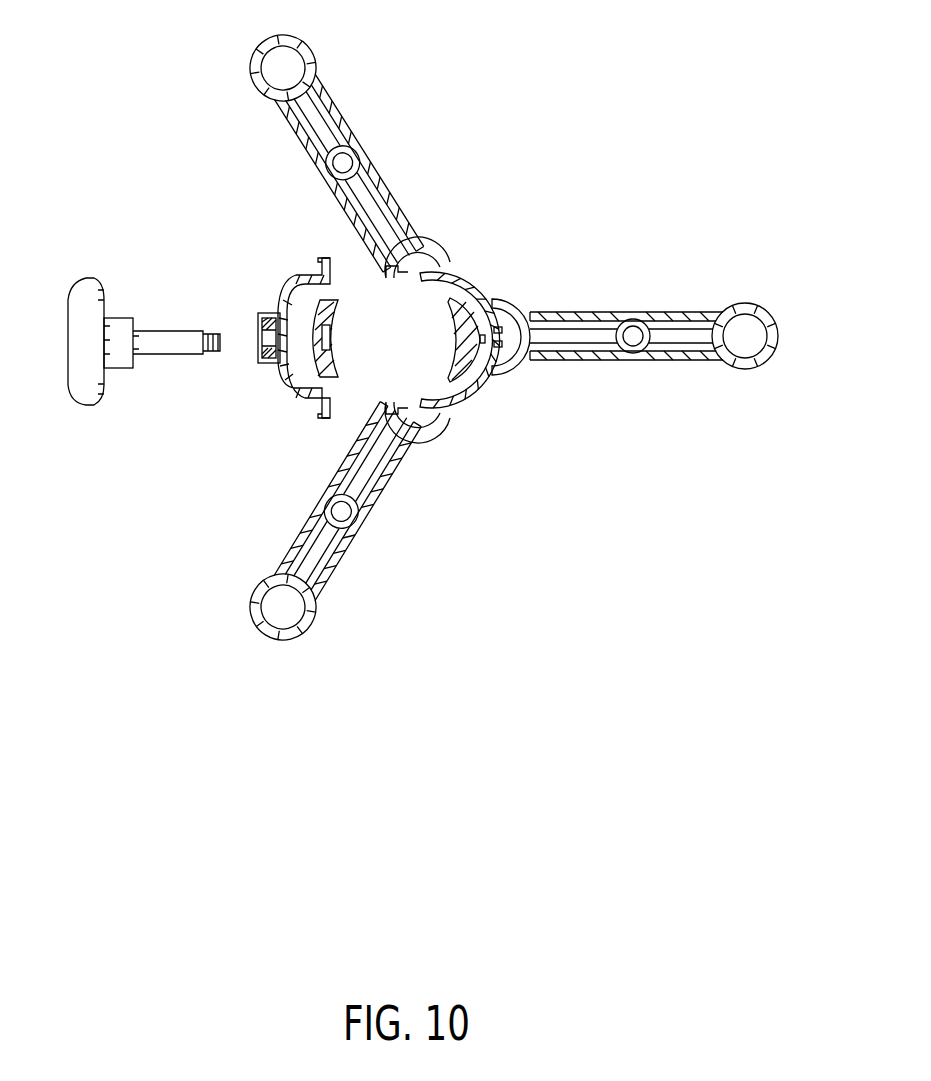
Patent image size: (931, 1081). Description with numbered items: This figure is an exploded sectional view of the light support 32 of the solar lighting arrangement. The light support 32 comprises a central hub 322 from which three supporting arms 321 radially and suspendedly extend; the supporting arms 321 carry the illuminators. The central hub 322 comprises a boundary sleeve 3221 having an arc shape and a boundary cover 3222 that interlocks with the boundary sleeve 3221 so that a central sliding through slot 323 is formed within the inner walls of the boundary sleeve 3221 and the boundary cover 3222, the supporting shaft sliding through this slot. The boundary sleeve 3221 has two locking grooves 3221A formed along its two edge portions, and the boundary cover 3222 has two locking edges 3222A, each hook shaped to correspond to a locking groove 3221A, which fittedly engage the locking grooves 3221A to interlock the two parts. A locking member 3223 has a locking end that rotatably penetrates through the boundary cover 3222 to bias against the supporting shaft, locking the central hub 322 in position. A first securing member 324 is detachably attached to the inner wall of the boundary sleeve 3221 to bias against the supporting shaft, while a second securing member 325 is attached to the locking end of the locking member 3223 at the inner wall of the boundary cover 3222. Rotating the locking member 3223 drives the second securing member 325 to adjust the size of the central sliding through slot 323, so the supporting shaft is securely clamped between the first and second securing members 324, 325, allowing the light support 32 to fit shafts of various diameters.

The light support 32 is at (680, 207).
The supporting arms 321 is at (330, 108).
The central hub 322 is at (600, 186).
The boundary sleeve 3221 is at (482, 294).
The locking grooves 3221A is at (402, 266).
The boundary cover 3222 is at (322, 395).
The locking edges 3222A is at (328, 254).
The locking member 3223 is at (93, 390).
The central sliding through slot 323 is at (417, 368).
The first securing member 324 is at (467, 352).
The second securing member 325 is at (328, 372).